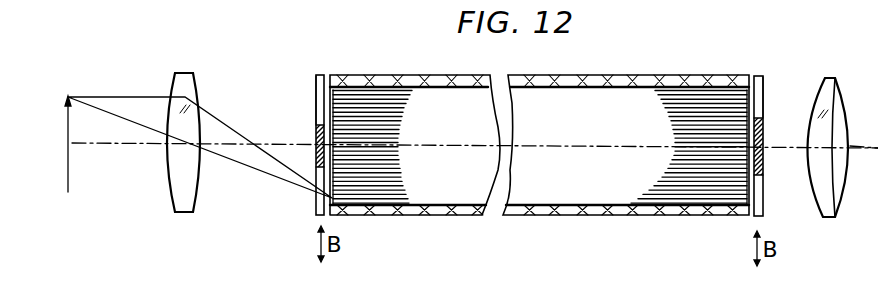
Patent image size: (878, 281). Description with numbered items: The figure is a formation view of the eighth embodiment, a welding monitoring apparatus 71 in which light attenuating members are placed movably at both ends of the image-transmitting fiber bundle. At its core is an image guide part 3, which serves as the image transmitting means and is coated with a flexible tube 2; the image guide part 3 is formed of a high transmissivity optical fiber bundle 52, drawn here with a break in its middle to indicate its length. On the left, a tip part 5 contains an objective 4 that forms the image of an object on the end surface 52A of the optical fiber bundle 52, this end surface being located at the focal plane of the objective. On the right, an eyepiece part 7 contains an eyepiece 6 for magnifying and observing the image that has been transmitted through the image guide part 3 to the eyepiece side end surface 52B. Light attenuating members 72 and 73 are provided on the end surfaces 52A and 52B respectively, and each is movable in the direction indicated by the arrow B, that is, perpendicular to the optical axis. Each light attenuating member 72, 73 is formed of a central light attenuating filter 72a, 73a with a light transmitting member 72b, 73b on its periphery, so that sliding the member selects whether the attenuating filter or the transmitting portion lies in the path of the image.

The flexible tube 2 is at (665, 212).
The image guide part 3 is at (405, 73).
The objective 4 is at (190, 87).
The tip part 5 is at (181, 62).
The eyepiece 6 is at (818, 192).
The eyepiece part 7 is at (829, 70).
The optical fiber bundle 52 is at (452, 188).
The end surface 52A is at (318, 78).
The eyepiece side end surface 52B is at (752, 98).
The welding monitoring apparatus 71 is at (639, 73).
The light attenuating member 72 is at (311, 203).
The light attenuating filter 72a is at (315, 137).
The light transmitting member 72b is at (315, 100).
The light attenuating member 73 is at (750, 225).
The light attenuating filter 73a is at (764, 140).
The light transmitting member 73b is at (764, 82).